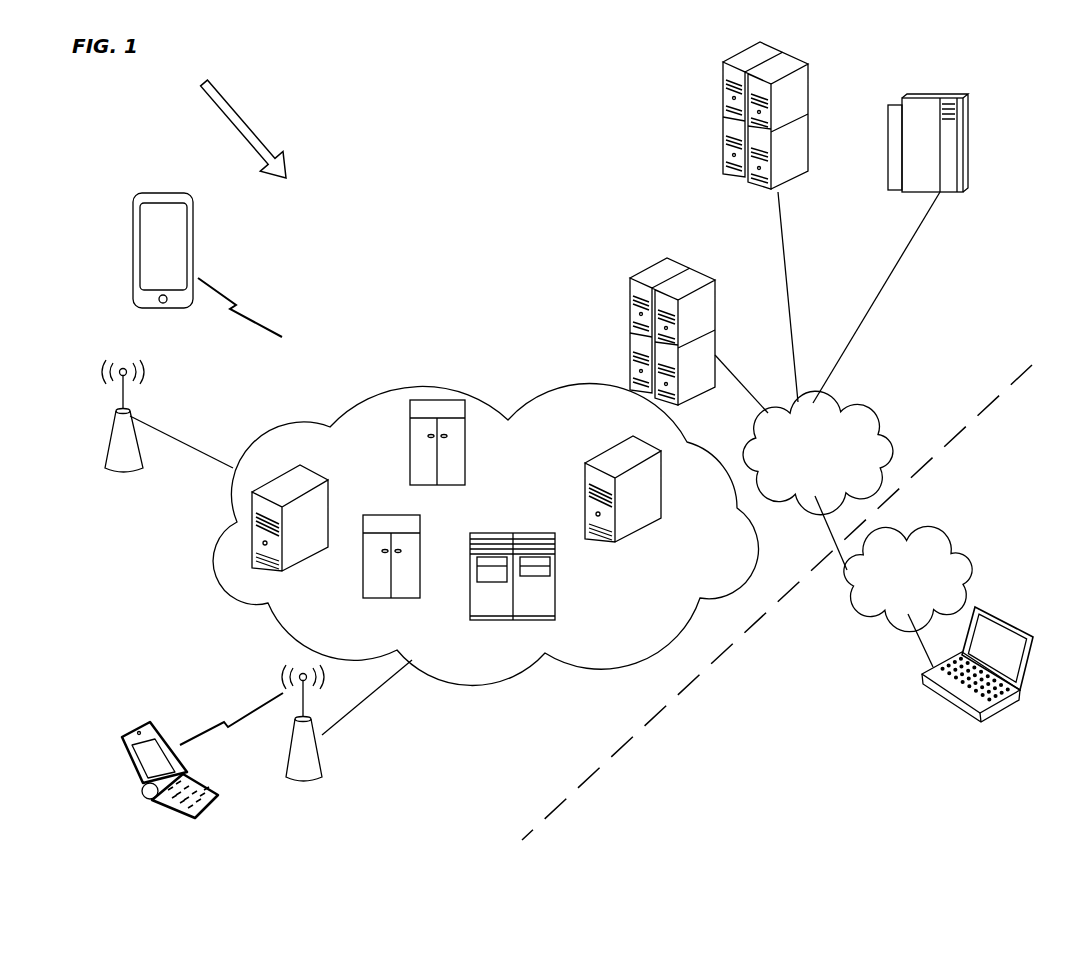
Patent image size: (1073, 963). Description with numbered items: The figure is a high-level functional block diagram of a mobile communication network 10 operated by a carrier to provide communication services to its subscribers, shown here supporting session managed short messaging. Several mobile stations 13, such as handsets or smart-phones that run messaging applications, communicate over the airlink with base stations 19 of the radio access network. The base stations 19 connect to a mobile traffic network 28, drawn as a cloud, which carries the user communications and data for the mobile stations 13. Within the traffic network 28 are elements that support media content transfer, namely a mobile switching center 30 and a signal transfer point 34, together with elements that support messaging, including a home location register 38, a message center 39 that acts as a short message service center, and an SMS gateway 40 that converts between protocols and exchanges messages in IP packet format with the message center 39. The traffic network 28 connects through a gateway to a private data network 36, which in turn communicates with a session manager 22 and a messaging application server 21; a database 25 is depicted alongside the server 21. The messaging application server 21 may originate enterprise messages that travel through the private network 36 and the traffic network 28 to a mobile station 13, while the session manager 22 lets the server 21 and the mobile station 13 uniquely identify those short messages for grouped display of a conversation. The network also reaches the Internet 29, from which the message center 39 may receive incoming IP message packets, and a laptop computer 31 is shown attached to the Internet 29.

The mobile communication network 10 is at (234, 122).
The mobile station 13 is at (133, 232).
The base station 19 is at (107, 447).
The messaging application server 21 is at (808, 67).
The session manager 22 is at (717, 293).
The database 25 is at (963, 139).
The mobile traffic network 28 is at (384, 391).
The Internet 29 is at (863, 612).
The mobile switching center 30 is at (290, 531).
The laptop computer 31 is at (943, 703).
The signal transfer point 34 is at (623, 503).
The private data network 36 is at (880, 418).
The home location register 38 is at (512, 590).
The message center 39 is at (392, 569).
The SMS gateway 40 is at (438, 456).